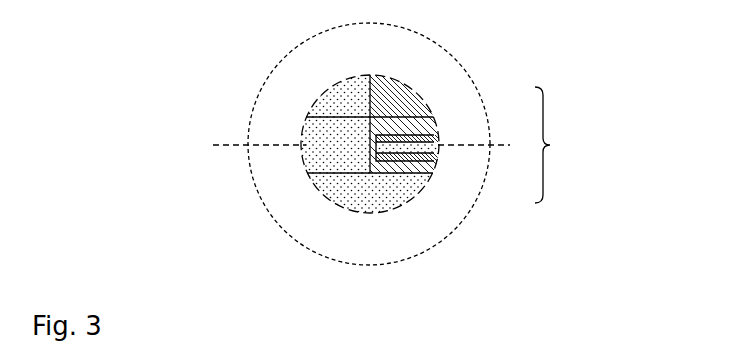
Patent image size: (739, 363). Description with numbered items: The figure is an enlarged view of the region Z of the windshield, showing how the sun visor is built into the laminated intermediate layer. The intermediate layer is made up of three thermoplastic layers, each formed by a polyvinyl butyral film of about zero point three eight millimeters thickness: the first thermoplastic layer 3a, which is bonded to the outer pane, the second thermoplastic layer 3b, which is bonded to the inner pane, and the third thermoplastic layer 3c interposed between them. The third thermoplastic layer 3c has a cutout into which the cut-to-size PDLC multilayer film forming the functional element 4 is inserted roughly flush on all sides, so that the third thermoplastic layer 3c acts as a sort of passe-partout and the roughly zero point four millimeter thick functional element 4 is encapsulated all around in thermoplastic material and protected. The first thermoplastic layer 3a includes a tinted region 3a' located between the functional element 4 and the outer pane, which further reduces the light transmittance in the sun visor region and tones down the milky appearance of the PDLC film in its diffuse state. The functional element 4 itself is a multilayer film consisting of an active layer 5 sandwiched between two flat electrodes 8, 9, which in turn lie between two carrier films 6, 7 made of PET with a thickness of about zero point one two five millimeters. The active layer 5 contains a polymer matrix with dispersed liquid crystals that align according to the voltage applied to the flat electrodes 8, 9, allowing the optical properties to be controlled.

The first thermoplastic layer 3a is at (308, 79).
The tinted region 3a' is at (432, 79).
The second thermoplastic layer 3b is at (400, 188).
The third thermoplastic layer 3c is at (320, 135).
The functional element 4 is at (554, 145).
The active layer 5 is at (449, 145).
The carrier film 6 is at (437, 123).
The carrier film 7 is at (440, 168).
The flat electrode 8 is at (438, 137).
The flat electrode 9 is at (438, 157).
The region Z is at (353, 144).